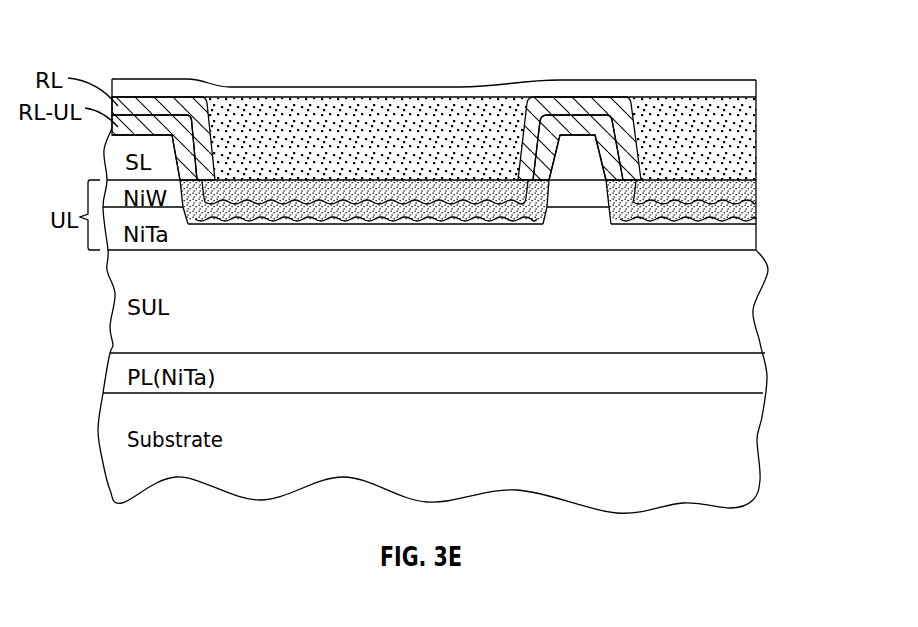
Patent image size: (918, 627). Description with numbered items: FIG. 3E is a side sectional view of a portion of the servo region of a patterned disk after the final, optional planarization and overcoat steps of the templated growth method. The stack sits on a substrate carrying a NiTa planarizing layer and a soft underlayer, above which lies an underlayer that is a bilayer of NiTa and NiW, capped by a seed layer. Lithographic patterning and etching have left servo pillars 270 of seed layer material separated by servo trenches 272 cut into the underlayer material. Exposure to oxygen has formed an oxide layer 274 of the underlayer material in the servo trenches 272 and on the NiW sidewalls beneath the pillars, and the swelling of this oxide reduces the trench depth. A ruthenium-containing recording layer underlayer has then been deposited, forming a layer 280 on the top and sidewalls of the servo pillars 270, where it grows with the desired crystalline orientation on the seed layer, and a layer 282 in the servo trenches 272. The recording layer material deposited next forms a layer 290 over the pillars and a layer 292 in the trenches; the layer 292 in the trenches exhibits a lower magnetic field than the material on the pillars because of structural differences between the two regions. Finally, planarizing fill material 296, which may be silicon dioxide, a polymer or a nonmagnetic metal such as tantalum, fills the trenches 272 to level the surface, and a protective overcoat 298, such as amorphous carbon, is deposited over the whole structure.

The servo pillars 270 is at (108, 177).
The servo trenches 272 is at (282, 227).
The oxide layer 274 is at (187, 227).
The RL-UL layer on servo pillars 280 is at (180, 130).
The RL-UL layer in servo trenches 282 is at (260, 223).
The RL layer on servo pillars 290 is at (135, 105).
The RL layer in servo trenches 292 is at (752, 200).
The planarizing fill material 296 is at (335, 118).
The protective overcoat 298 is at (227, 93).